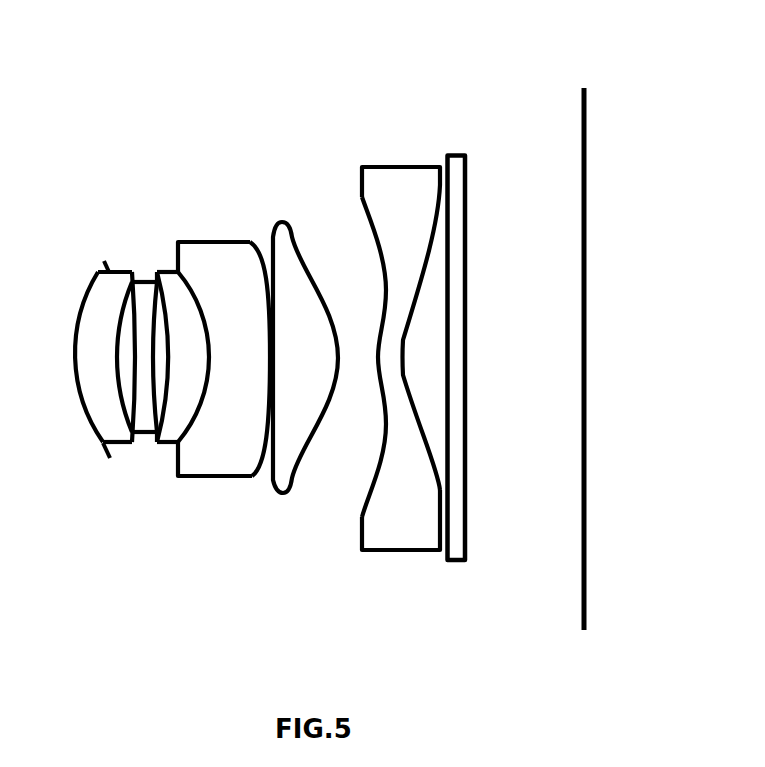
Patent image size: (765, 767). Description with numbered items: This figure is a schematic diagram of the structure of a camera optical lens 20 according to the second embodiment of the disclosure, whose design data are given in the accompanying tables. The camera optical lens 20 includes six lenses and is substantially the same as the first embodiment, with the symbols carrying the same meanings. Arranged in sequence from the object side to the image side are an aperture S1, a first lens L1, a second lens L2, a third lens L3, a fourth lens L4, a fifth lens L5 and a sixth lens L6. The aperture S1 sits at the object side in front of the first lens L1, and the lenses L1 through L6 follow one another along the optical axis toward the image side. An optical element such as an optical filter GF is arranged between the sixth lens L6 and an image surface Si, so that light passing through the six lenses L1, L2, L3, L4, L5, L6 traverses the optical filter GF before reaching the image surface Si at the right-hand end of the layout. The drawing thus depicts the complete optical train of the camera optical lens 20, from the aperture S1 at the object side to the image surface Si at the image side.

The camera optical lens 20 is at (320, 45).
The aperture S1 is at (91, 351).
The first lens L1 is at (105, 336).
The second lens L2 is at (137, 343).
The third lens L3 is at (180, 329).
The fourth lens L4 is at (224, 344).
The fifth lens L5 is at (304, 341).
The sixth lens L6 is at (401, 344).
The optical filter GF is at (454, 342).
The image surface Si is at (584, 345).